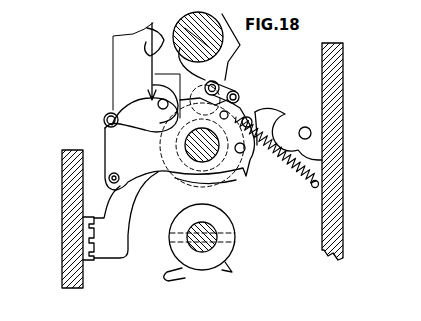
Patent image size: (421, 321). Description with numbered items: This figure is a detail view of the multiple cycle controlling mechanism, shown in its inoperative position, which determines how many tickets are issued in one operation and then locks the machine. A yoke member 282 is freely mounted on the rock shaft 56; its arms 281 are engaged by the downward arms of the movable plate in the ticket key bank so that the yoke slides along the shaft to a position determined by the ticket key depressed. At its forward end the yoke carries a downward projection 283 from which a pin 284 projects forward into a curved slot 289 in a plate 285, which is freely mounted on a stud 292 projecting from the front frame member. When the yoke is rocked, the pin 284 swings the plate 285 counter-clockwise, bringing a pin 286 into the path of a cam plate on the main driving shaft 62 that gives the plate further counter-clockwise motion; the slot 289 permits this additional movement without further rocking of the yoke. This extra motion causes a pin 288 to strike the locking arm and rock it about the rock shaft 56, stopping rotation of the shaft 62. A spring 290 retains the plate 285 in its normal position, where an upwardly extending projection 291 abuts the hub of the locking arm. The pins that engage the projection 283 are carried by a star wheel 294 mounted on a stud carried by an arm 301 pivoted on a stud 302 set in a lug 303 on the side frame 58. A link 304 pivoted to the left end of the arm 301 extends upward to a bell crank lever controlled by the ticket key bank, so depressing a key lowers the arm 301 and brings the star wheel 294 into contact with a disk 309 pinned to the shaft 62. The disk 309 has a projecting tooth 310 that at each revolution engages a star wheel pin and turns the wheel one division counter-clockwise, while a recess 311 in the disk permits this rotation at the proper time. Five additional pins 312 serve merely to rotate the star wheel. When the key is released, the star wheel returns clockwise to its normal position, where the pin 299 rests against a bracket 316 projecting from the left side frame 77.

The side frame 58 is at (337, 190).
The left side frame 77 is at (72, 238).
The rock shaft 56 is at (186, 24).
The main driving shaft 62 is at (222, 266).
The arms of the yoke member 281 is at (165, 36).
The yoke member 282 is at (218, 16).
The projection 283 is at (220, 90).
The pin 284 is at (215, 84).
The plate 285 is at (103, 136).
The pin 286 is at (130, 162).
The pin 288 is at (106, 112).
The curved slot 289 is at (238, 98).
The spring 290 is at (292, 184).
The projection 291 is at (152, 64).
The stud 292 is at (246, 170).
The star wheel 294 is at (236, 180).
The pin 299 is at (172, 166).
The arm 301 is at (258, 126).
The stud 302 is at (306, 134).
The lug 303 is at (303, 127).
The link 304 is at (125, 43).
The disk 309 is at (232, 248).
The projecting tooth 310 is at (168, 270).
The recess 311 is at (178, 250).
The pins 312 is at (158, 102).
The bracket 316 is at (137, 193).